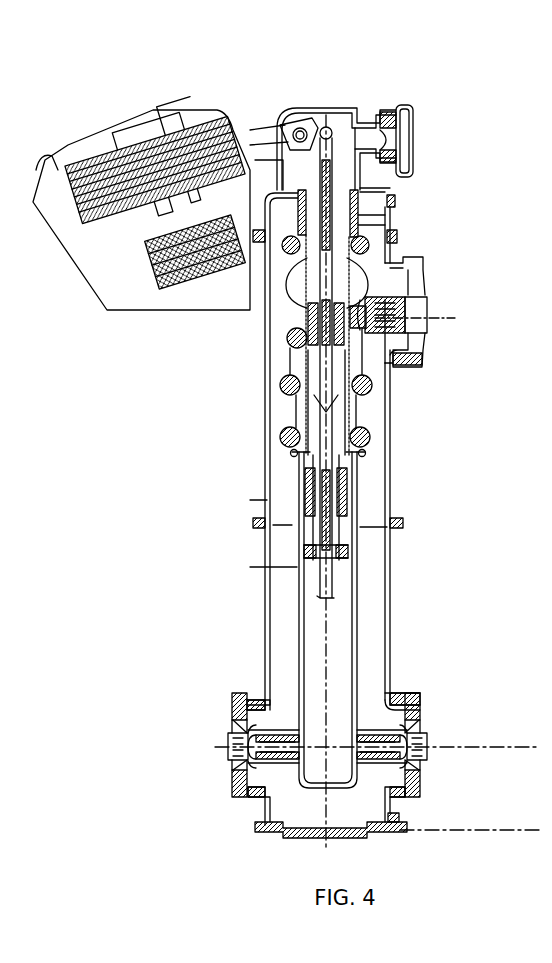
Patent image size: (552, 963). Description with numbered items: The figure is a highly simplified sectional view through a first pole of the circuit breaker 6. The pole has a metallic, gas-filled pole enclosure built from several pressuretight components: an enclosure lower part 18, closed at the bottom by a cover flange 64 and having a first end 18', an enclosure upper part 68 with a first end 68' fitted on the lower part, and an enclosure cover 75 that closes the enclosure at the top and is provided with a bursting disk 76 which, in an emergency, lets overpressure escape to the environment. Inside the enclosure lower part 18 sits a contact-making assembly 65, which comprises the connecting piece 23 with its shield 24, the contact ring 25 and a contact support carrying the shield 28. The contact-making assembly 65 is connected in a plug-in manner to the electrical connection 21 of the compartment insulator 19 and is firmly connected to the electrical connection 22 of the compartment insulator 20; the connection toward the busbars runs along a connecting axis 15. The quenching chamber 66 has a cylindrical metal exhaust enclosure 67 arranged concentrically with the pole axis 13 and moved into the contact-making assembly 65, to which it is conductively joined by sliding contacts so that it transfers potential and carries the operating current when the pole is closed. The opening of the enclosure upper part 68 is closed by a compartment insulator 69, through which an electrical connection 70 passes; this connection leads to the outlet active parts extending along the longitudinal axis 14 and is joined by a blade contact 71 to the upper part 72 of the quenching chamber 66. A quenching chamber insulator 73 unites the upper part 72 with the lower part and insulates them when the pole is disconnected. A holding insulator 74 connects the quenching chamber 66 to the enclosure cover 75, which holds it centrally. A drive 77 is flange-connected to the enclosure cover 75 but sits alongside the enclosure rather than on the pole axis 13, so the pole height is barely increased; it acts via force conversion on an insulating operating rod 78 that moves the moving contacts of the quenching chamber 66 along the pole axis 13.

The circuit breaker 6 is at (450, 407).
The pole axis 13 is at (326, 100).
The longitudinal axis 14 is at (457, 318).
The connecting axis 15 is at (533, 747).
The enclosure lower part 18 is at (253, 619).
The first end of enclosure lower part 18' is at (429, 429).
The compartment insulator 19 is at (237, 728).
The compartment insulator 20 is at (420, 772).
The electrical connection 21 is at (237, 753).
The electrical connection 22 is at (423, 743).
The connecting piece 23 is at (410, 732).
The shield 24 is at (388, 730).
The contact ring 25 is at (263, 792).
The shield 28 is at (262, 697).
The cover flange 64 is at (388, 835).
The contact-making assembly 65 is at (240, 765).
The quenching chamber 66 is at (381, 438).
The exhaust enclosure 67 is at (300, 567).
The enclosure upper part 68 is at (255, 449).
The first end of enclosure upper part 68' is at (421, 219).
The compartment insulator 69 is at (418, 340).
The electrical connection 70 is at (423, 307).
The blade contact 71 is at (410, 300).
The upper part of quenching chamber 72 is at (300, 338).
The quenching chamber insulator 73 is at (300, 408).
The holding insulator 74 is at (372, 222).
The enclosure cover 75 is at (365, 125).
The knob 76 is at (388, 140).
The drive 77 is at (142, 165).
The insulating operating rod 78 is at (305, 128).